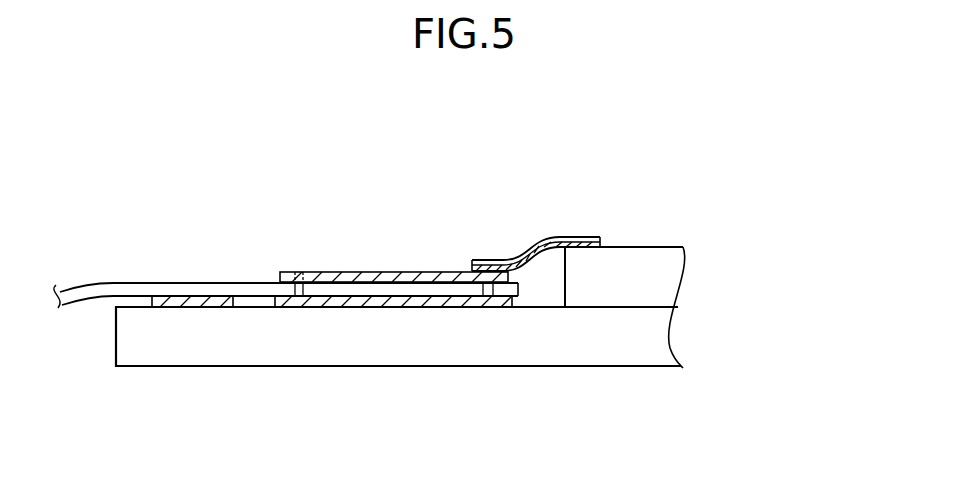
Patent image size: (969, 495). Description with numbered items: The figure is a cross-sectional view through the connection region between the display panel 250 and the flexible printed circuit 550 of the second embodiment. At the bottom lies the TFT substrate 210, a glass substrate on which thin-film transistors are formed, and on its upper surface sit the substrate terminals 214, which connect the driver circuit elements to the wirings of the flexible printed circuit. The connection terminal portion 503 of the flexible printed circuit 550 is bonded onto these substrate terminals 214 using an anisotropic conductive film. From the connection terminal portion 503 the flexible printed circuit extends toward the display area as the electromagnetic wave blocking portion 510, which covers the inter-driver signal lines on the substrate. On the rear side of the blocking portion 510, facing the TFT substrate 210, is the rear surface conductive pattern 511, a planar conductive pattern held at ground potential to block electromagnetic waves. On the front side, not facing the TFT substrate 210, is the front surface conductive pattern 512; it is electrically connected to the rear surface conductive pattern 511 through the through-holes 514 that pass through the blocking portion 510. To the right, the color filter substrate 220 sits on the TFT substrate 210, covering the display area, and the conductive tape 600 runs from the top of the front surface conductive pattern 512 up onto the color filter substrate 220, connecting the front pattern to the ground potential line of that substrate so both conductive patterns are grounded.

The TFT substrate 210 is at (625, 355).
The substrate terminals 214 is at (204, 300).
The color filter substrate 220 is at (640, 258).
The display panel 250 is at (723, 308).
The connection terminal portion 503 is at (194, 264).
The electromagnetic wave blocking portion 510 is at (453, 228).
The rear surface conductive pattern 511 is at (398, 298).
The front surface conductive pattern 512 is at (392, 276).
The through-holes 514 is at (297, 272).
The flexible printed circuit 550 is at (91, 283).
The conductive tape 600 is at (583, 239).